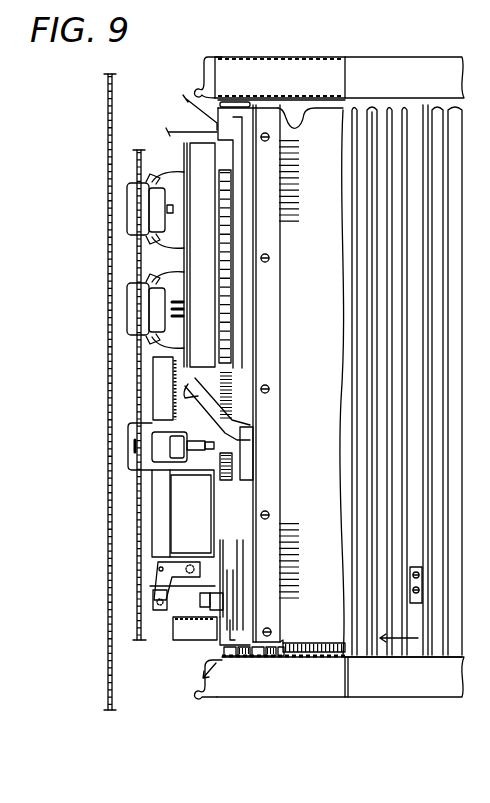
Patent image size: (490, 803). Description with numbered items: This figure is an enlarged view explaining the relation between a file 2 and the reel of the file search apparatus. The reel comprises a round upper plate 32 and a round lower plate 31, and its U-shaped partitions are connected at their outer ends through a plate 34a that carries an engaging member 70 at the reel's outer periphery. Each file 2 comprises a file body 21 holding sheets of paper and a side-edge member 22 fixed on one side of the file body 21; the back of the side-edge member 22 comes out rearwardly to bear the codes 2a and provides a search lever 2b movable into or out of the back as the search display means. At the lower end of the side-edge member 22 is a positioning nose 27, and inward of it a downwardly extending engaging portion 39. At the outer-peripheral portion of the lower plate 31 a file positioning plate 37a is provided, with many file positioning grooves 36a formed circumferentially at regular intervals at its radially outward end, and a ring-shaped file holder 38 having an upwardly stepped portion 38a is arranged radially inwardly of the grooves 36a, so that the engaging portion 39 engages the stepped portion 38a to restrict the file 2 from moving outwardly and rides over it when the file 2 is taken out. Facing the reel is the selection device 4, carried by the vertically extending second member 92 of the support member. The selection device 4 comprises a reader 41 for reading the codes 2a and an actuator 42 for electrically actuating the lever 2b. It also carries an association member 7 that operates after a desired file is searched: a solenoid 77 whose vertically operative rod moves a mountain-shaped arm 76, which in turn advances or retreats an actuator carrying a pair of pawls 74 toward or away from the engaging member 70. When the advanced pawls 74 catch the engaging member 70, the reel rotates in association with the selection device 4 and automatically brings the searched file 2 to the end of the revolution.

The second member 92 is at (108, 88).
The upper plate 32 is at (238, 97).
The side-edge member 22 is at (270, 612).
The positioning nose 27 is at (288, 640).
The file 2 is at (312, 657).
The file body 21 is at (343, 640).
The engaging member 70 is at (420, 603).
The lower plate 31 is at (205, 672).
The file positioning groove 36a is at (232, 658).
The file positioning plate 37a is at (260, 658).
The upwardly stepped portion 38a is at (263, 657).
The engaging portion 39 is at (270, 657).
The file holder 38 is at (279, 657).
The plate 34a is at (213, 640).
The pawl 74 is at (190, 621).
The mountain-shaped arm 76 is at (156, 580).
The association member 7 is at (150, 524).
The solenoid 77 is at (175, 496).
The actuator 42 is at (177, 449).
The search lever 2b is at (213, 392).
The reader 41 is at (200, 262).
The codes 2a is at (215, 233).
The selection device 4 is at (128, 300).